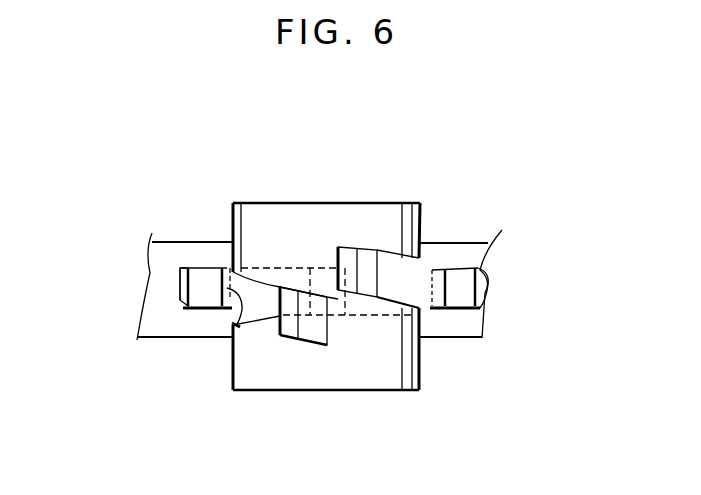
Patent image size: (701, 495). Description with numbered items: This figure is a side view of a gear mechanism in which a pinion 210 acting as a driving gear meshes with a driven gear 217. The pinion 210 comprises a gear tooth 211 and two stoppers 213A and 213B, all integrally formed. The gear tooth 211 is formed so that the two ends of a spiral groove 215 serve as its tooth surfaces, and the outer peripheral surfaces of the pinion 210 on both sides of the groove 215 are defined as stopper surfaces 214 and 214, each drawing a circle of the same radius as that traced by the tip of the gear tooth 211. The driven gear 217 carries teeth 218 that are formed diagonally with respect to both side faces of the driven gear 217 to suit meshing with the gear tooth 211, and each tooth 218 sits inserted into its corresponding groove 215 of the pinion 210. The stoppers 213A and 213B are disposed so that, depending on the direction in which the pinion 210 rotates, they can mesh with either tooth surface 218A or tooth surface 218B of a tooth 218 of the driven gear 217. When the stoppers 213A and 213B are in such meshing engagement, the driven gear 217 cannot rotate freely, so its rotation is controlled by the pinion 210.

The pinion 210 is at (412, 151).
The gear tooth 211 is at (335, 318).
The stopper 213A is at (291, 228).
The stopper 213B is at (378, 375).
The stopper surface 214 is at (233, 222).
The spiral groove 215 is at (268, 325).
The driven gear 217 is at (510, 232).
The tooth 218 is at (198, 310).
The tooth surface 218A is at (233, 323).
The tooth surface 218B is at (180, 293).